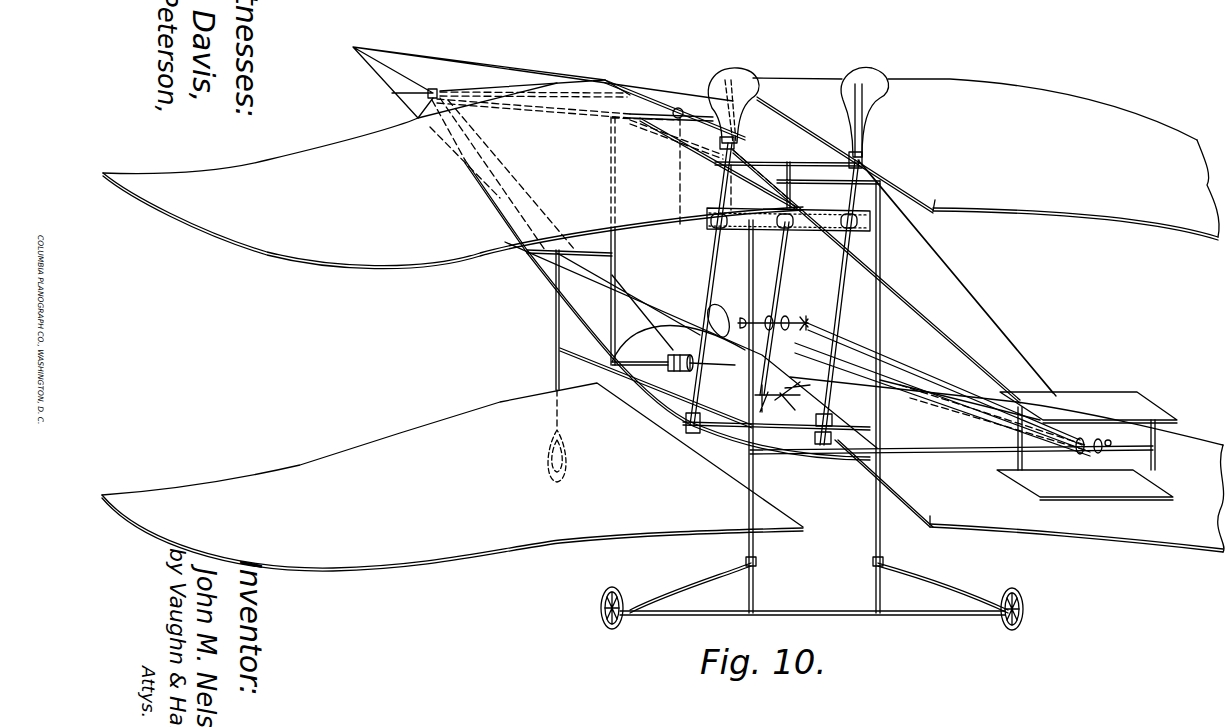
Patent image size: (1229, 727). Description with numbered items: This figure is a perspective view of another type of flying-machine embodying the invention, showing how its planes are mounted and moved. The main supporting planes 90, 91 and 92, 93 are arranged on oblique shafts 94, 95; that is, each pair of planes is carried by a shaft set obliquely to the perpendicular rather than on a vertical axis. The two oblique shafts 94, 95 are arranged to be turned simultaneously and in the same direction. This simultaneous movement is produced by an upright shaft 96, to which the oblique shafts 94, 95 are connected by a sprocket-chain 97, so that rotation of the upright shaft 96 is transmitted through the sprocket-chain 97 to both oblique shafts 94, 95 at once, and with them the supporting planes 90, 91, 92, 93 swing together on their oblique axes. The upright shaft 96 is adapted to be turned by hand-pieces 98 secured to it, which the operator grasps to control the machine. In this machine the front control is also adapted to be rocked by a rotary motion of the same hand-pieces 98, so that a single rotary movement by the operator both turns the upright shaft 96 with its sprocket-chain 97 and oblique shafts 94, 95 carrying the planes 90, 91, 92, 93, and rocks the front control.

The main supporting plane 90 is at (437, 247).
The main supporting plane 91 is at (1130, 213).
The main supporting plane 92 is at (570, 523).
The main supporting plane 93 is at (1153, 527).
The oblique shaft 94 is at (710, 265).
The oblique shaft 95 is at (838, 279).
The upright shaft 96 is at (783, 262).
The sprocket-chain 97 is at (828, 218).
The hand-pieces 98 is at (797, 310).